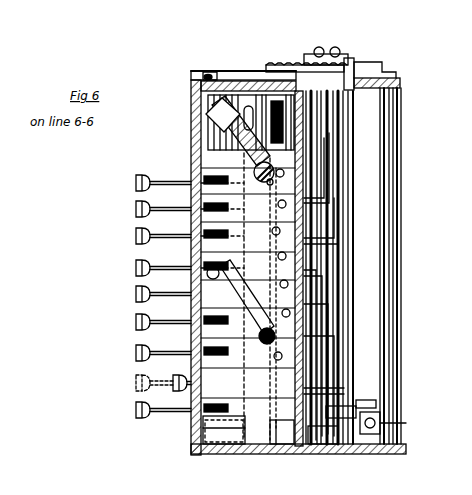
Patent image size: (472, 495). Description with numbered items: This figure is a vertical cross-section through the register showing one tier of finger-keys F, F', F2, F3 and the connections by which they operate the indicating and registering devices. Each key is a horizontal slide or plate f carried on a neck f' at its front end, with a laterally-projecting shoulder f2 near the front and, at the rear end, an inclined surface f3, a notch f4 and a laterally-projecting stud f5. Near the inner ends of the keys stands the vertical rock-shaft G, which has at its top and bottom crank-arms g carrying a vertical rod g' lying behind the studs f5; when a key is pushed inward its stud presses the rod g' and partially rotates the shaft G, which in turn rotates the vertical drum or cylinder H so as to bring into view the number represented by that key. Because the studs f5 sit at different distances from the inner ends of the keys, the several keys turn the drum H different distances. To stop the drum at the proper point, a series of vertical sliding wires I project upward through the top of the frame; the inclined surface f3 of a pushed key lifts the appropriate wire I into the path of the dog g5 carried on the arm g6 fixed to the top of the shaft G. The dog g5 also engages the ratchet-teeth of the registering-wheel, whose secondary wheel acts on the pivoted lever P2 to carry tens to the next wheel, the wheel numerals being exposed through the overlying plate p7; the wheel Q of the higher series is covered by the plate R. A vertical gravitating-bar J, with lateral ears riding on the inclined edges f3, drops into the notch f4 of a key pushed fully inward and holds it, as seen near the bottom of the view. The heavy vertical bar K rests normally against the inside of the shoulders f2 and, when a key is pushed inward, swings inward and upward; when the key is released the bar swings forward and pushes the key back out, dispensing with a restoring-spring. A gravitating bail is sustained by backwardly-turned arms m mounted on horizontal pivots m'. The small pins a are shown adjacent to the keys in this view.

The plate R is at (197, 63).
The pivoted lever P2 is at (276, 57).
The arm g6 is at (318, 40).
The dog g5 is at (342, 50).
The overlying plate p7 is at (376, 54).
The vertical sliding wire I is at (330, 128).
The vertical drum or cylinder H is at (251, 122).
The laterally-projecting shoulder f2 is at (184, 168).
The heavy vertical bar K is at (365, 450).
The finger-key F is at (176, 184).
The finger-key F' is at (178, 209).
The finger-key F2 is at (126, 229).
The key F3 is at (181, 268).
The key stems f' is at (163, 331).
The notch f4 is at (190, 410).
The inclined surface f3 is at (358, 358).
The laterally-projecting stud f5 is at (358, 384).
The horizontal slide or plate f is at (278, 281).
The pin a is at (272, 243).
The vertical gravitating-bar J is at (250, 436).
The vertical rock-shaft G is at (300, 436).
The crank-arm g is at (328, 444).
The backwardly-turned arm m is at (341, 407).
The vertical rod g' is at (369, 407).
The wheel Q is at (370, 423).
The horizontal pivot m' is at (403, 424).